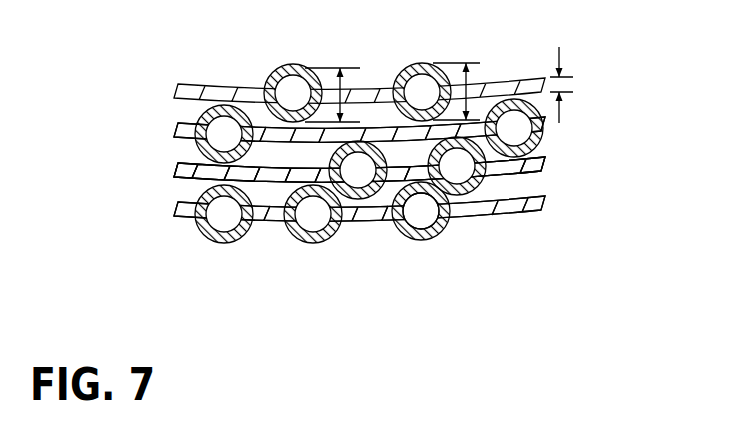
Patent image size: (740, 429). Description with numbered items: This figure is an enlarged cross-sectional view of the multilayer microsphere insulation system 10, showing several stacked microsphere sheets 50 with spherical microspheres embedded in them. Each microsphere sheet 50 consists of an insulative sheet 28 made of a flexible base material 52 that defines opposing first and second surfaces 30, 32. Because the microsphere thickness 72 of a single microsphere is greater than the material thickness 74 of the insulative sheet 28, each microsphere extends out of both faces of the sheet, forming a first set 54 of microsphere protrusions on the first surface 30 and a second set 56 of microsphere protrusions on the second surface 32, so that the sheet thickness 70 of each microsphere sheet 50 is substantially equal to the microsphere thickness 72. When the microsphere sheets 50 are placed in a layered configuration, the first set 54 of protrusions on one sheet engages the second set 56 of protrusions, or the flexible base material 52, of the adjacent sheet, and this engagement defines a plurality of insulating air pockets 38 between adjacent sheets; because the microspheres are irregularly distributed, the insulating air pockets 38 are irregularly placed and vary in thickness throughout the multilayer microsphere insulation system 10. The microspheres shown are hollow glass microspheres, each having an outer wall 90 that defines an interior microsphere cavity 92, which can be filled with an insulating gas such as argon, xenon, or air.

The multilayer microsphere insulation system 10 is at (354, 151).
The insulative sheet 28 is at (208, 80).
The first surface 30 is at (207, 162).
The second surface 32 is at (190, 177).
The insulating air pockets 38 is at (282, 146).
The microsphere sheet 50 is at (552, 165).
The flexible base material 52 is at (500, 206).
The first set of microsphere protrusions 54 is at (218, 170).
The second set of microsphere protrusions 56 is at (228, 245).
The sheet thickness 70 is at (344, 86).
The microsphere thickness 72 is at (471, 78).
The material thickness 74 is at (561, 55).
The outer wall 90 is at (439, 239).
The interior microsphere cavity 92 is at (410, 212).